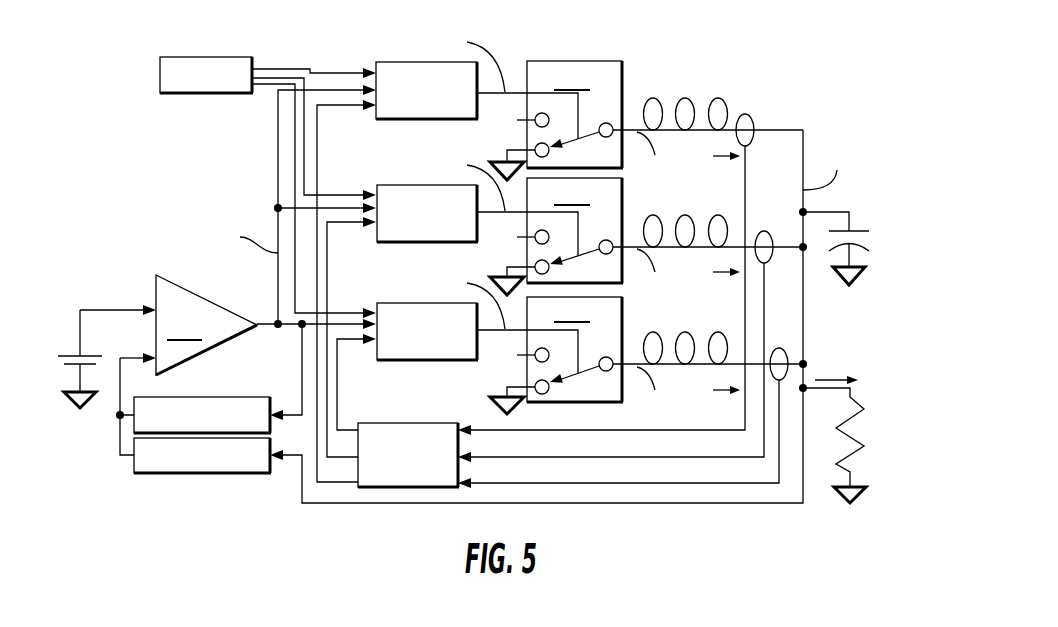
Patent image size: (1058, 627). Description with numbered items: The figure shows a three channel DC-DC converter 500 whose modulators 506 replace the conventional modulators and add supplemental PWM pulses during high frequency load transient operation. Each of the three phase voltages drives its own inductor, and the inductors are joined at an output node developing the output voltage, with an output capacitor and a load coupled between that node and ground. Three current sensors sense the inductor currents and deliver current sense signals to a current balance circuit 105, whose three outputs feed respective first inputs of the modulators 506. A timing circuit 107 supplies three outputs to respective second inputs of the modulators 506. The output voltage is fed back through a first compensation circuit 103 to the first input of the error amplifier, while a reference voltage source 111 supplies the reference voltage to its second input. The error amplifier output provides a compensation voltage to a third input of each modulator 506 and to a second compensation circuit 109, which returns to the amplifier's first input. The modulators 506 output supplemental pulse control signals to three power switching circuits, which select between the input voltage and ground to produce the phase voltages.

The three channel DC-DC converter 500 is at (108, 150).
The timing circuit 107 is at (187, 57).
The modulators 506 is at (397, 62).
The current balance circuit 105 is at (403, 422).
The reference voltage source 111 is at (68, 357).
The second compensation circuit 109 is at (190, 397).
The first compensation circuit 103 is at (190, 473).